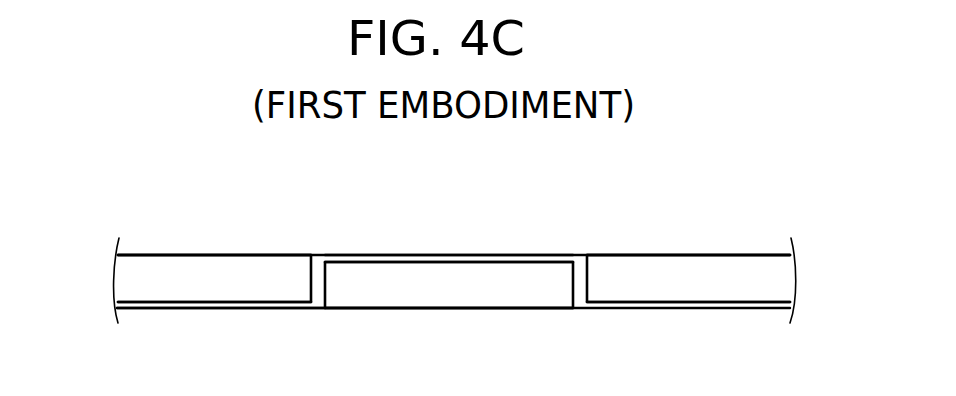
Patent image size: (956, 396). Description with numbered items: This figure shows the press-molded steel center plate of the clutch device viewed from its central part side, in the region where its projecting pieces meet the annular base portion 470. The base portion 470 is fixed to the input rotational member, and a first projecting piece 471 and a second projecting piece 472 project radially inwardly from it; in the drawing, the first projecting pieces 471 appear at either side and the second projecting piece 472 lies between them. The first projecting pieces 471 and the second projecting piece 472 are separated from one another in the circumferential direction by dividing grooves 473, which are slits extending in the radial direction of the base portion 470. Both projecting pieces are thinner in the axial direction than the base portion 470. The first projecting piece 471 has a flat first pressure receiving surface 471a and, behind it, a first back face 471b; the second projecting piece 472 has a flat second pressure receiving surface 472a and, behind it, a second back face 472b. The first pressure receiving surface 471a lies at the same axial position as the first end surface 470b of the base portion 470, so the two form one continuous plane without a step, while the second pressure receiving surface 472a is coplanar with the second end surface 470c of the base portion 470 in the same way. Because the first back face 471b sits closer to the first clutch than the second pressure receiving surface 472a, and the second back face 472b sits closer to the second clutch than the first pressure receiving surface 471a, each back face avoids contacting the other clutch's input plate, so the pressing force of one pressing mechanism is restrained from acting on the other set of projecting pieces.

The base portion 470 is at (580, 267).
The first end surface 470b is at (472, 254).
The second end surface 470c is at (267, 310).
The first projecting piece 471 is at (277, 262).
The first pressure receiving surface 471a is at (208, 253).
The first back face 471b is at (203, 303).
The second projecting piece 472 is at (472, 292).
The second pressure receiving surface 472a is at (438, 310).
The second back face 472b is at (435, 260).
The dividing groove 473 is at (320, 258).